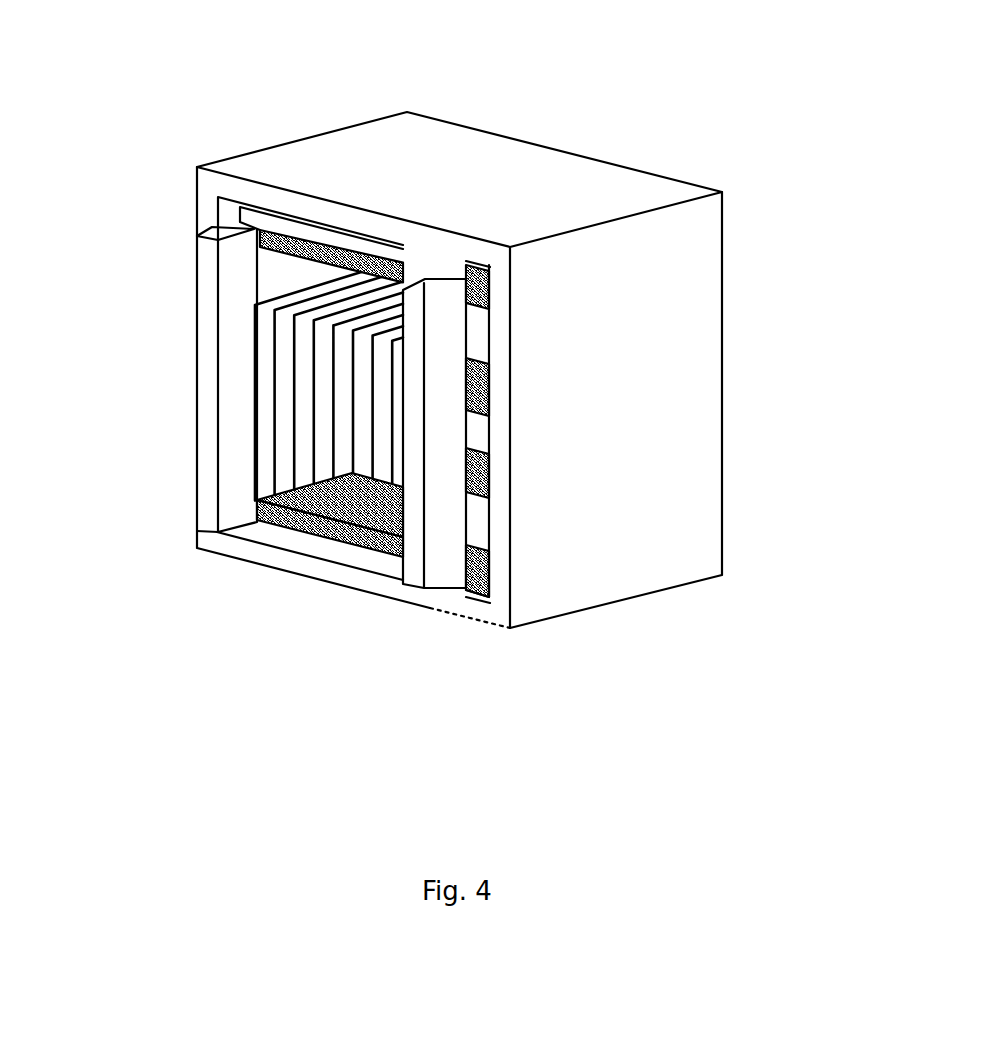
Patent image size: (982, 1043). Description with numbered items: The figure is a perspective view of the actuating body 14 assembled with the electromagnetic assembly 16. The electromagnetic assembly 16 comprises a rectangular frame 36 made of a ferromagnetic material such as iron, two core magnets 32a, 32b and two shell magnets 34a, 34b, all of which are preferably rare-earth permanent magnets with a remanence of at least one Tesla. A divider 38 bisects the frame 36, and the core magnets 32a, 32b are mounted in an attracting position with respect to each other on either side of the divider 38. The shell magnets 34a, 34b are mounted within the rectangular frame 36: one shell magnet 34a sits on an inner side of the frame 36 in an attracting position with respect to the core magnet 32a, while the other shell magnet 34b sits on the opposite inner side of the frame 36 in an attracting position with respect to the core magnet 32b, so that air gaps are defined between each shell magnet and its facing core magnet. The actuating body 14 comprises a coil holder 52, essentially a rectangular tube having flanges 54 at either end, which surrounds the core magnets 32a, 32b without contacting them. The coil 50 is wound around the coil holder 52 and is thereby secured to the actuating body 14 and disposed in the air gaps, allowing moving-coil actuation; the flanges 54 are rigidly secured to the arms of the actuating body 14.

The electromagnetic assembly 16 is at (575, 164).
The rectangular frame 36 is at (350, 155).
The flanges 54 is at (237, 273).
The coil holder 52 is at (265, 386).
The coil 50 is at (290, 410).
The actuating body 14 is at (449, 553).
The divider 38 is at (478, 433).
The shell magnet 34a is at (489, 290).
The core magnet 32a is at (489, 369).
The core magnet 32b is at (489, 482).
The shell magnet 34b is at (489, 583).